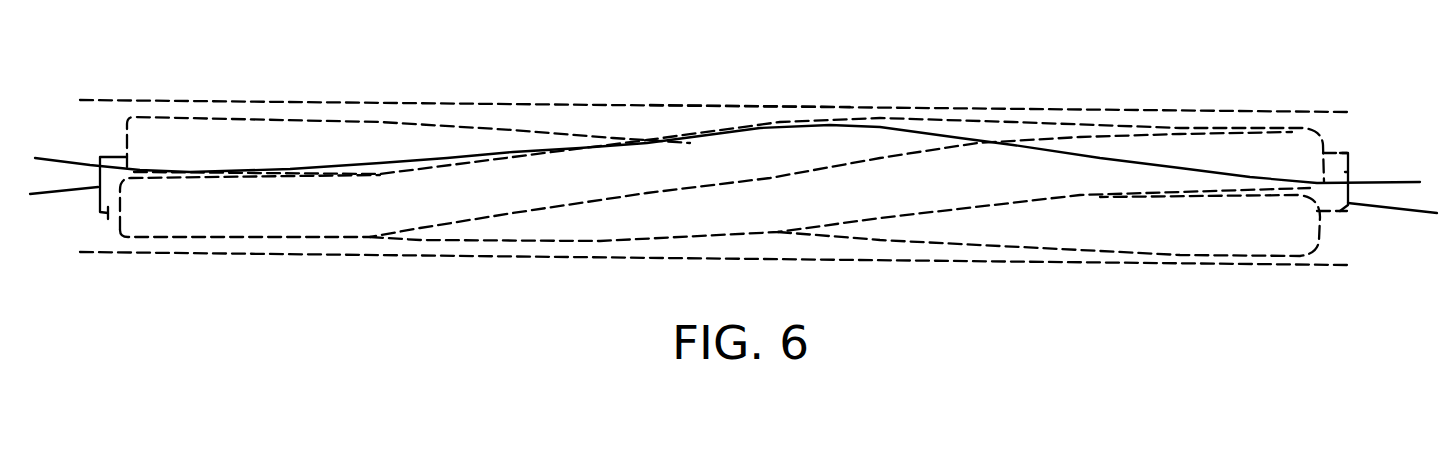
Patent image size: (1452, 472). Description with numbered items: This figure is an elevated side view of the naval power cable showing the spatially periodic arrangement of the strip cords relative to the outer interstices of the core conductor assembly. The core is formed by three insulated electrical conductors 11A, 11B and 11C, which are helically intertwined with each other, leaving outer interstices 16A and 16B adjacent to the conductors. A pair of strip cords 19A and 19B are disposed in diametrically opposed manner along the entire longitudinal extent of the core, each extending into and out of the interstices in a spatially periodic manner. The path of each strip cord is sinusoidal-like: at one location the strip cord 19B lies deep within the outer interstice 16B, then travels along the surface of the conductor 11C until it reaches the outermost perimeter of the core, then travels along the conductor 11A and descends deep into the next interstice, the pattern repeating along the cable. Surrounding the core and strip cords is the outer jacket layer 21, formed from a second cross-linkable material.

The electrical conductor 11A is at (273, 221).
The electrical conductor 11B is at (108, 216).
The electrical conductor 11C is at (303, 121).
The outer interstice 16A is at (188, 168).
The outer interstice 16B is at (1293, 191).
The strip cord 19A is at (70, 190).
The strip cord 19B is at (447, 158).
The outer jacket layer 21 is at (748, 103).